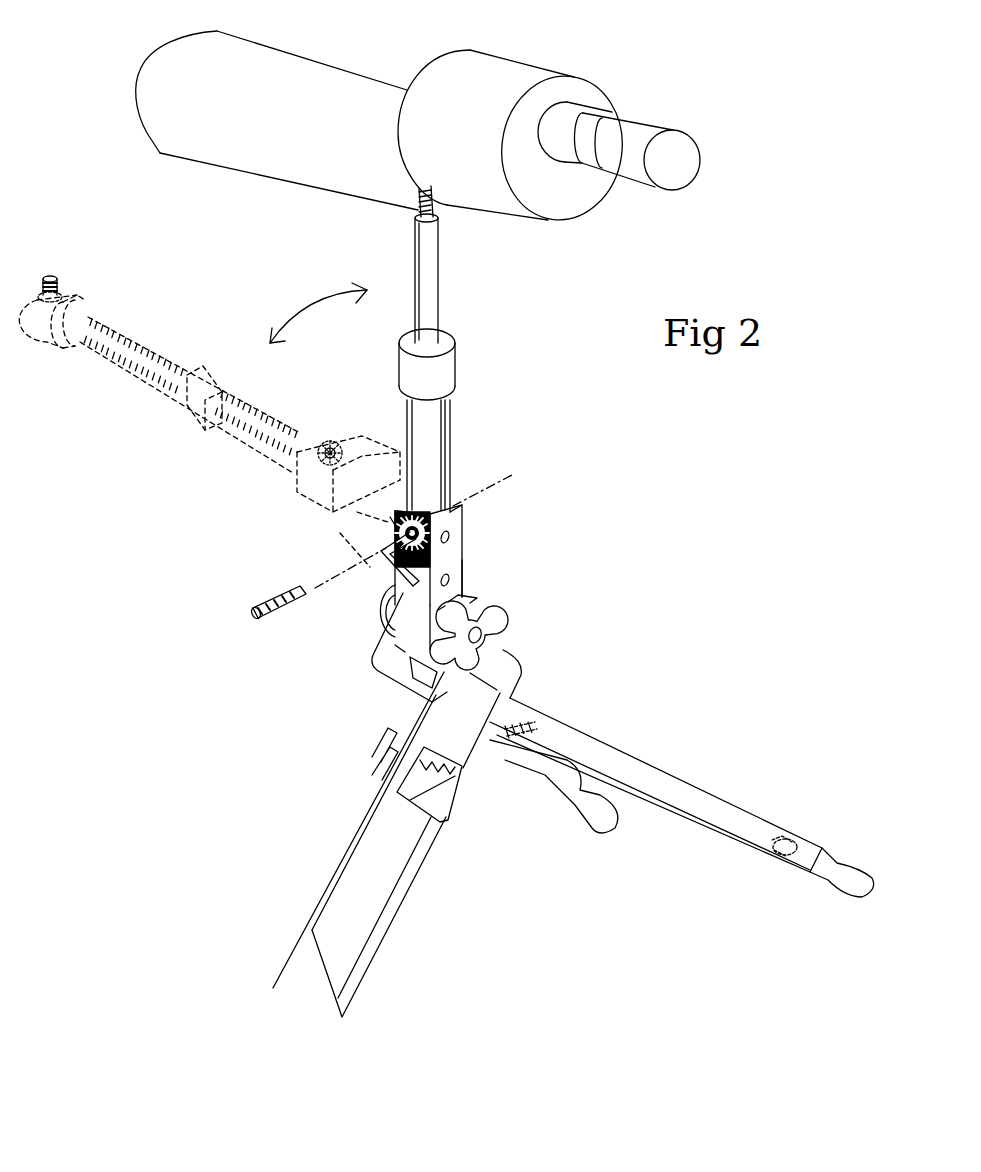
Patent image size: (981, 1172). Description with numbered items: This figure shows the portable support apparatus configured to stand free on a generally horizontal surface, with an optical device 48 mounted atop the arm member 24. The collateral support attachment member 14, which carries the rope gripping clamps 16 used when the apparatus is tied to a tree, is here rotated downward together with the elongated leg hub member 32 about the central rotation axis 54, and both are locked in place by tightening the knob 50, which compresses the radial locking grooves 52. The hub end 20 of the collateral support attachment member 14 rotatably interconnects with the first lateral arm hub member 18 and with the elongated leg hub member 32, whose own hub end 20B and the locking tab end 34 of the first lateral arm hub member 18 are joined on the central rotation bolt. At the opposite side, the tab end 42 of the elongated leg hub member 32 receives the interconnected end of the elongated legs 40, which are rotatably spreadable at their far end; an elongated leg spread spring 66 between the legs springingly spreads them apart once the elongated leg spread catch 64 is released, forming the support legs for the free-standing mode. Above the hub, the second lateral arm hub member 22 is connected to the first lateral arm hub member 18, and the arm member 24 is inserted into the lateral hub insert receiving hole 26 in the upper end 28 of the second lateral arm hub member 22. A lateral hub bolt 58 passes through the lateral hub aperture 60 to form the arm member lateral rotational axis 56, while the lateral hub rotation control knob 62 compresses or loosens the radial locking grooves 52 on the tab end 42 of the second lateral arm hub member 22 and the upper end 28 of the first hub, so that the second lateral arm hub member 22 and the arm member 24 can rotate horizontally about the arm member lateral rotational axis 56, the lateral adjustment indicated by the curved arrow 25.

The collateral support attachment member 14 is at (392, 843).
The rope gripping clamps 16 is at (430, 800).
The first lateral arm hub member 18 is at (455, 558).
The hub end 20 is at (507, 642).
The hub end of the elongated leg hub member 20B is at (387, 653).
The second lateral arm hub member 22 is at (357, 512).
The arm member 24 is at (160, 368).
The curved arrow 25 is at (320, 297).
The lateral hub insert receiving hole 26 is at (445, 487).
The upper end 28 is at (458, 503).
The elongated leg hub member 32 is at (423, 698).
The locking tab end 34 is at (458, 592).
The elongated legs 40 is at (635, 778).
The tab end 42 is at (388, 507).
The optical device 48 is at (277, 152).
The knob 50 is at (478, 608).
The radial locking grooves 52 is at (388, 527).
The central rotation axis 54 is at (523, 662).
The arm member lateral rotational axis 56 is at (406, 537).
The lateral hub bolt 58 is at (390, 517).
The lateral hub aperture 60 is at (400, 537).
The lateral hub rotation control knob 62 is at (400, 558).
The elongated leg spread catch 64 is at (777, 837).
The elongated leg spread spring 66 is at (533, 723).